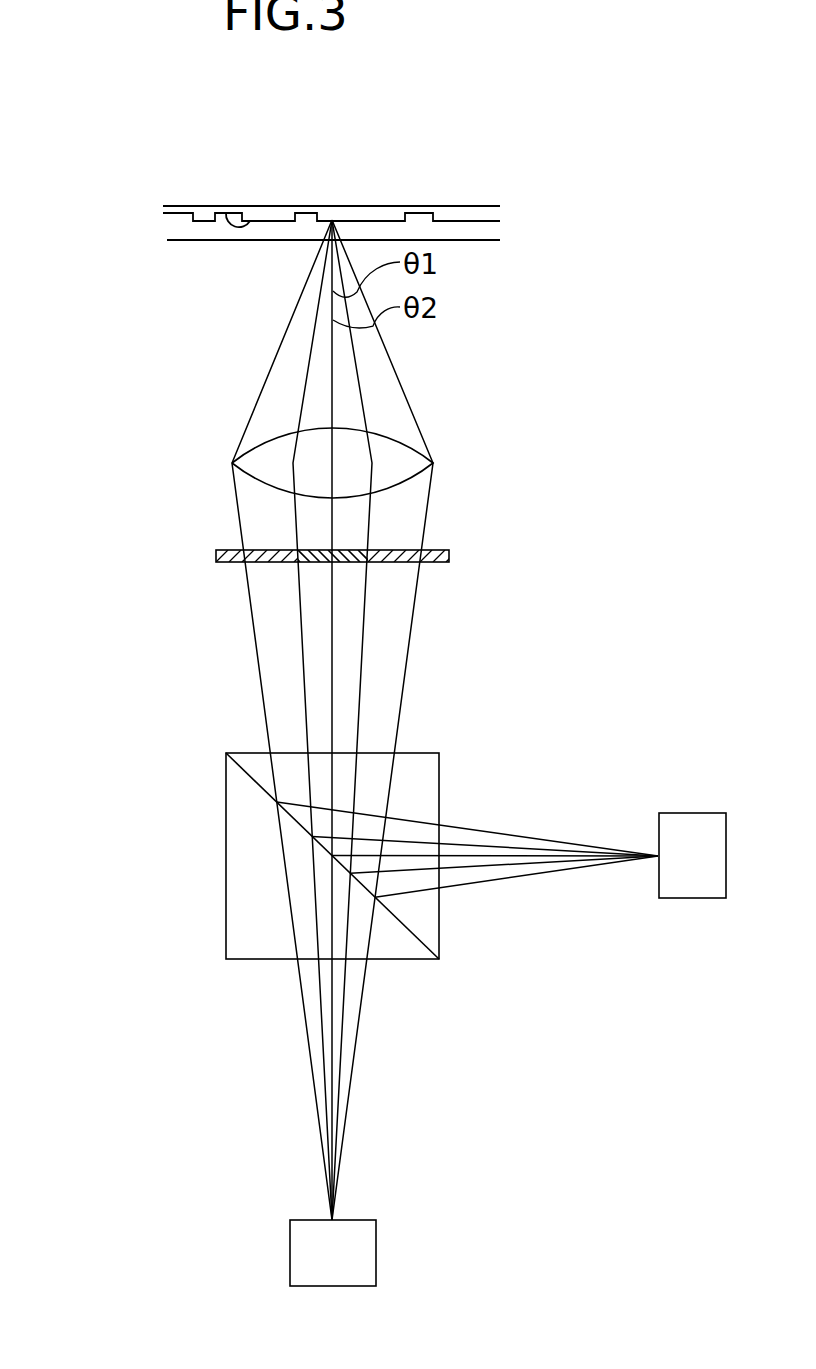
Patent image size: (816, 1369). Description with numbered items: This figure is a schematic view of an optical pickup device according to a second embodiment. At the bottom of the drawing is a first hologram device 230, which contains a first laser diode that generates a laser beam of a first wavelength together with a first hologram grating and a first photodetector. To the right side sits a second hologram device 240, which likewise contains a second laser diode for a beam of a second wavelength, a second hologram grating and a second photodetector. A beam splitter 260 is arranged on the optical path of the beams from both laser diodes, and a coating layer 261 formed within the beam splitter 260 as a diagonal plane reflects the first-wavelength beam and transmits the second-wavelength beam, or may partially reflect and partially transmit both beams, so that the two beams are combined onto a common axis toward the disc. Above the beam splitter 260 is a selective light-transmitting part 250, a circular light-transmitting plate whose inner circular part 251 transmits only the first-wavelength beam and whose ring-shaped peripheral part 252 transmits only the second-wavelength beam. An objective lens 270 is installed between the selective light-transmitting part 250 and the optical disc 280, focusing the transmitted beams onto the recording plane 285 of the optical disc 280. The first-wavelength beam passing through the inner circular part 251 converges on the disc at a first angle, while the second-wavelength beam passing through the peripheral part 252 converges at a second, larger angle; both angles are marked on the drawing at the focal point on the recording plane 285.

The first hologram device 230 is at (305, 1238).
The second hologram device 240 is at (676, 805).
The selective light-transmitting part 250 is at (347, 533).
The inner circular part 251 is at (322, 547).
The peripheral part 252 is at (228, 563).
The beam splitter 260 is at (213, 833).
The coating layer 261 is at (407, 925).
The objective lens 270 is at (267, 458).
The optical disc 280 is at (182, 225).
The recording plane 285 is at (257, 220).